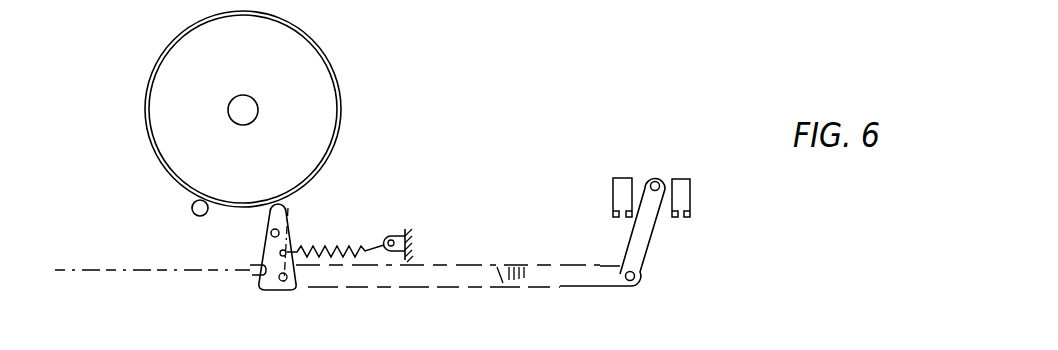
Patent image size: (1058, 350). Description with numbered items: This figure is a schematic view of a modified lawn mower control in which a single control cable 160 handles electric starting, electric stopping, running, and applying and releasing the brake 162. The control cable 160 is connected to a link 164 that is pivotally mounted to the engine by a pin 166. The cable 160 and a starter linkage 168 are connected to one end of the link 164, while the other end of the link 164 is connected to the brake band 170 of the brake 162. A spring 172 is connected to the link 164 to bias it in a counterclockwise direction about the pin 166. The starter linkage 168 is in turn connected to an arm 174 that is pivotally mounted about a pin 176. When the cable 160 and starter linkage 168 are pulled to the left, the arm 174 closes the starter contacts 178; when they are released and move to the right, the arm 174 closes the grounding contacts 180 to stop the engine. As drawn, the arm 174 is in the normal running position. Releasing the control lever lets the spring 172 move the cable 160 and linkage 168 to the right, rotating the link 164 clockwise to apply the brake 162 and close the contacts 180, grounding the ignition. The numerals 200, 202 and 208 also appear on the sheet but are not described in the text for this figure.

The control cable 160 is at (80, 265).
The brake 162 is at (143, 123).
The link 164 is at (262, 242).
The pin 166 is at (288, 232).
The starter linkage 168 is at (500, 263).
The brake band 170 is at (346, 126).
The spring 172 is at (363, 243).
The arm 174 is at (650, 253).
The pin 176 is at (655, 179).
The starter contacts 178 is at (612, 192).
The grounding contacts 180 is at (692, 198).
The carriage 200 is at (521, 10).
The guide 202 is at (581, 14).
The arm 208 is at (451, 14).